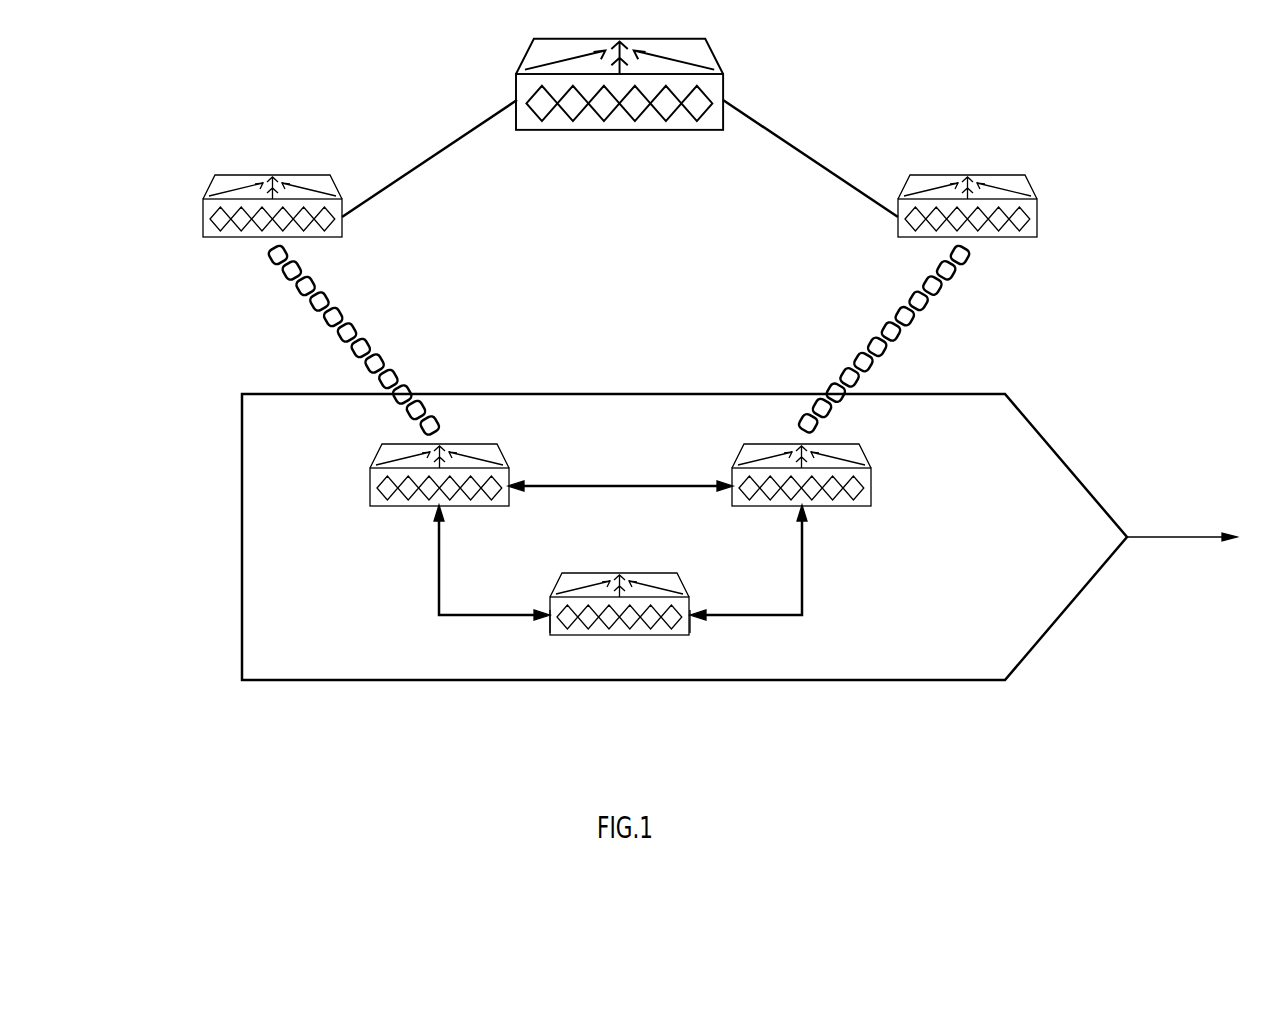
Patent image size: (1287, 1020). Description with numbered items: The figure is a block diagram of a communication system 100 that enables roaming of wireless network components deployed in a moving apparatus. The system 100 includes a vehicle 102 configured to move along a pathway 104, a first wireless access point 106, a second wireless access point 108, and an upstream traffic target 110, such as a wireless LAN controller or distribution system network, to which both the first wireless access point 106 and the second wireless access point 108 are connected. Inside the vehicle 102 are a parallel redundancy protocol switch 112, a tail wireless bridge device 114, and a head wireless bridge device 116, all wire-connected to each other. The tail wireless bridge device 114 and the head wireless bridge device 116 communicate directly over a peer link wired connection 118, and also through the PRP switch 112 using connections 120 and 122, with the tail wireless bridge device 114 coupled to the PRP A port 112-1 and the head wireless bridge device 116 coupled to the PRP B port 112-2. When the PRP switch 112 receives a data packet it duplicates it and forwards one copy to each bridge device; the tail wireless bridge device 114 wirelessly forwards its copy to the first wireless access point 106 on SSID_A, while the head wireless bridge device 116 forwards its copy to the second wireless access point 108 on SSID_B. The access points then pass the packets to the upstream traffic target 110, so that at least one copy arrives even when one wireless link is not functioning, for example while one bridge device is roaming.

The communication system 100 is at (213, 80).
The vehicle 102 is at (878, 681).
The pathway 104 is at (1150, 538).
The first wireless access point 106 is at (203, 217).
The second wireless access point 108 is at (1037, 217).
The upstream traffic target 110 is at (724, 88).
The parallel redundancy protocol switch 112 is at (610, 634).
The PRP A port (LAN_A) 112-1 is at (550, 625).
The PRP B port (LAN_B) 112-2 is at (690, 620).
The tail wireless bridge device 114 is at (465, 442).
The head wireless bridge device 116 is at (768, 442).
The peer link wired connection 118 is at (590, 488).
The connection 120 is at (440, 580).
The connection 122 is at (801, 580).